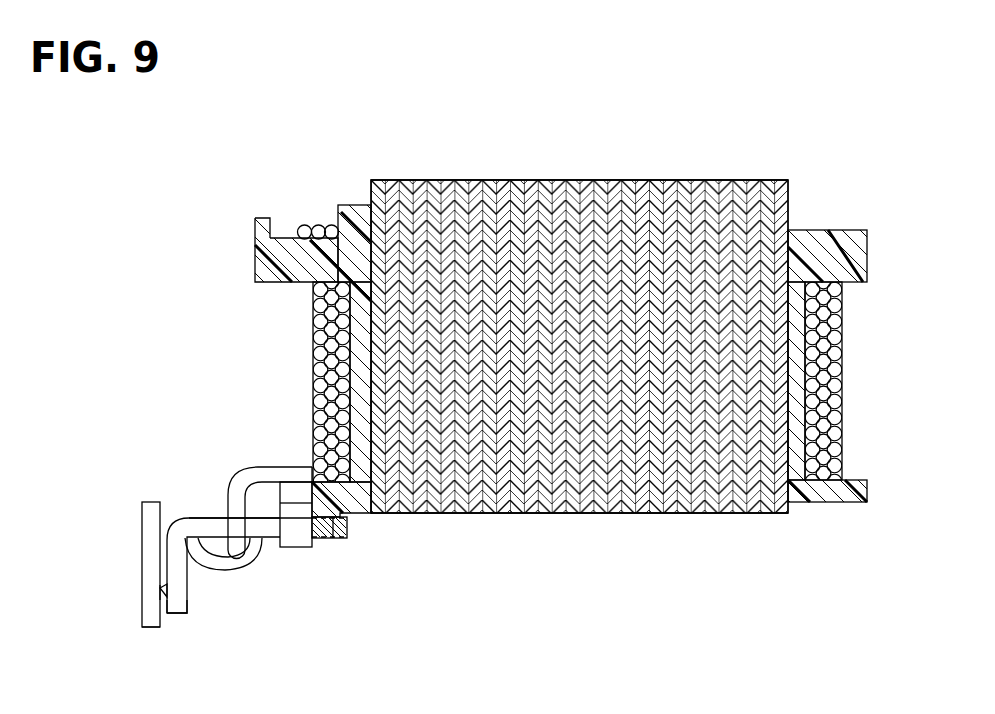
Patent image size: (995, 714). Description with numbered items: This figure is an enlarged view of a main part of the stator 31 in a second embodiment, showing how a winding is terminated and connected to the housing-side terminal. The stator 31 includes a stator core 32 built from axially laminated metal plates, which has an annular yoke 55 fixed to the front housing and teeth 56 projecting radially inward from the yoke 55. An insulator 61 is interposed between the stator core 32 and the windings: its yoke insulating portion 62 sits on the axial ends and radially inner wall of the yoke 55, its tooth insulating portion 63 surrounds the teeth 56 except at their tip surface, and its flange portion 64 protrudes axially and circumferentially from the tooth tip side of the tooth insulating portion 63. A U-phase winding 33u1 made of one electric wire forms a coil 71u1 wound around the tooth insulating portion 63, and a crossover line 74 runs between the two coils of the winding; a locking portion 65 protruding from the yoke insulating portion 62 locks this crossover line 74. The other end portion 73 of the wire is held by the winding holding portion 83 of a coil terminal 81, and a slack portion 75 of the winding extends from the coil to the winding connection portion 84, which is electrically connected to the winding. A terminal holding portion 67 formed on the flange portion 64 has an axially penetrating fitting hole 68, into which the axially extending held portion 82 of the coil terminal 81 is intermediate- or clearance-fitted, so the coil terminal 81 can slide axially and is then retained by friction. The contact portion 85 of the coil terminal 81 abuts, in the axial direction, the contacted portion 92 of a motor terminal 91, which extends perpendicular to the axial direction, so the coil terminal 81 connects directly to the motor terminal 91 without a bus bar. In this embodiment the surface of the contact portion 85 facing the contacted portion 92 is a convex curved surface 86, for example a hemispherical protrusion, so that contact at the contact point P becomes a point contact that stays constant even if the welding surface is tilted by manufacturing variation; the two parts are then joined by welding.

The stator 31 is at (417, 175).
The stator core 32 is at (486, 180).
The yoke 55 is at (565, 180).
The teeth 56 is at (558, 514).
The insulator 61 is at (254, 213).
The yoke insulating portion 62 is at (352, 214).
The tooth insulating portion 63 is at (358, 322).
The flange portion 64 is at (355, 500).
The locking portion 65 is at (262, 263).
The terminal holding portion 67 is at (288, 548).
The fitting hole 68 is at (345, 540).
The coil 71u1 is at (318, 300).
The other end portion 73 is at (298, 474).
The crossover line 74 is at (302, 226).
The slack portion 75 is at (247, 479).
The coil terminal 81 is at (199, 513).
The held portion 82 is at (310, 540).
The winding holding portion 83 is at (186, 546).
The winding connection portion 84 is at (231, 566).
The contact portion 85 is at (179, 614).
The convex curved surface 86 is at (160, 590).
The motor terminal 91 is at (150, 513).
The contacted portion 92 is at (151, 628).
The contact point P is at (160, 594).
The U-phase winding 33u1 is at (318, 382).